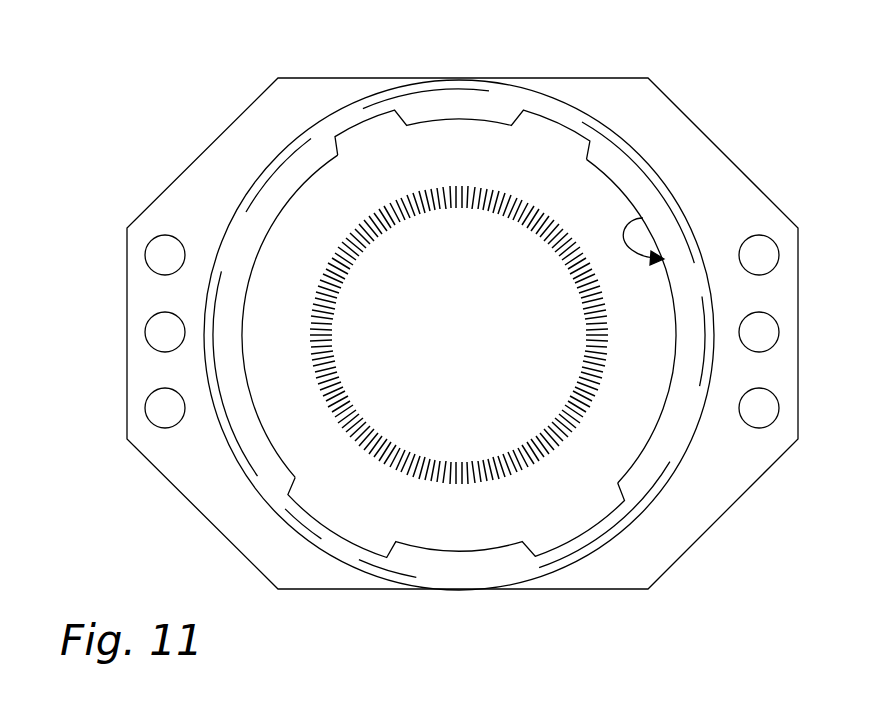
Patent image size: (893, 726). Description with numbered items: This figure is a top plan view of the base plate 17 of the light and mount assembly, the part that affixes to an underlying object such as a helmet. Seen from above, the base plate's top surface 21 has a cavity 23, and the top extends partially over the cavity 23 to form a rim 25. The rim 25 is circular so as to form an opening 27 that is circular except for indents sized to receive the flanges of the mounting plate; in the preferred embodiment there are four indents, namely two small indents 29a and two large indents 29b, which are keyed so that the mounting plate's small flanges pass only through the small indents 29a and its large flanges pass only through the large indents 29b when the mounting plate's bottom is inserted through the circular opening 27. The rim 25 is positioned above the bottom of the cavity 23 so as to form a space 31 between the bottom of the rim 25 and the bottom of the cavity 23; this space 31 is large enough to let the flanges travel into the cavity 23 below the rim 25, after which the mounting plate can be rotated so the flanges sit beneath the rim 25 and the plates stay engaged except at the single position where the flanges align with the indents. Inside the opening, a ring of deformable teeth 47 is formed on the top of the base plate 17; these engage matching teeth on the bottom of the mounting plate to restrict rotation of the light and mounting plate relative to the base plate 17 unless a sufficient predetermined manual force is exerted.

The base plate 17 is at (722, 185).
The top surface 21 is at (707, 498).
The cavity 23 is at (428, 356).
The rim 25 is at (482, 105).
The circular opening 27 is at (662, 300).
The small indents 29a is at (362, 133).
The large indents 29b is at (570, 527).
The space 31 is at (643, 218).
The deformable teeth 47 is at (578, 388).